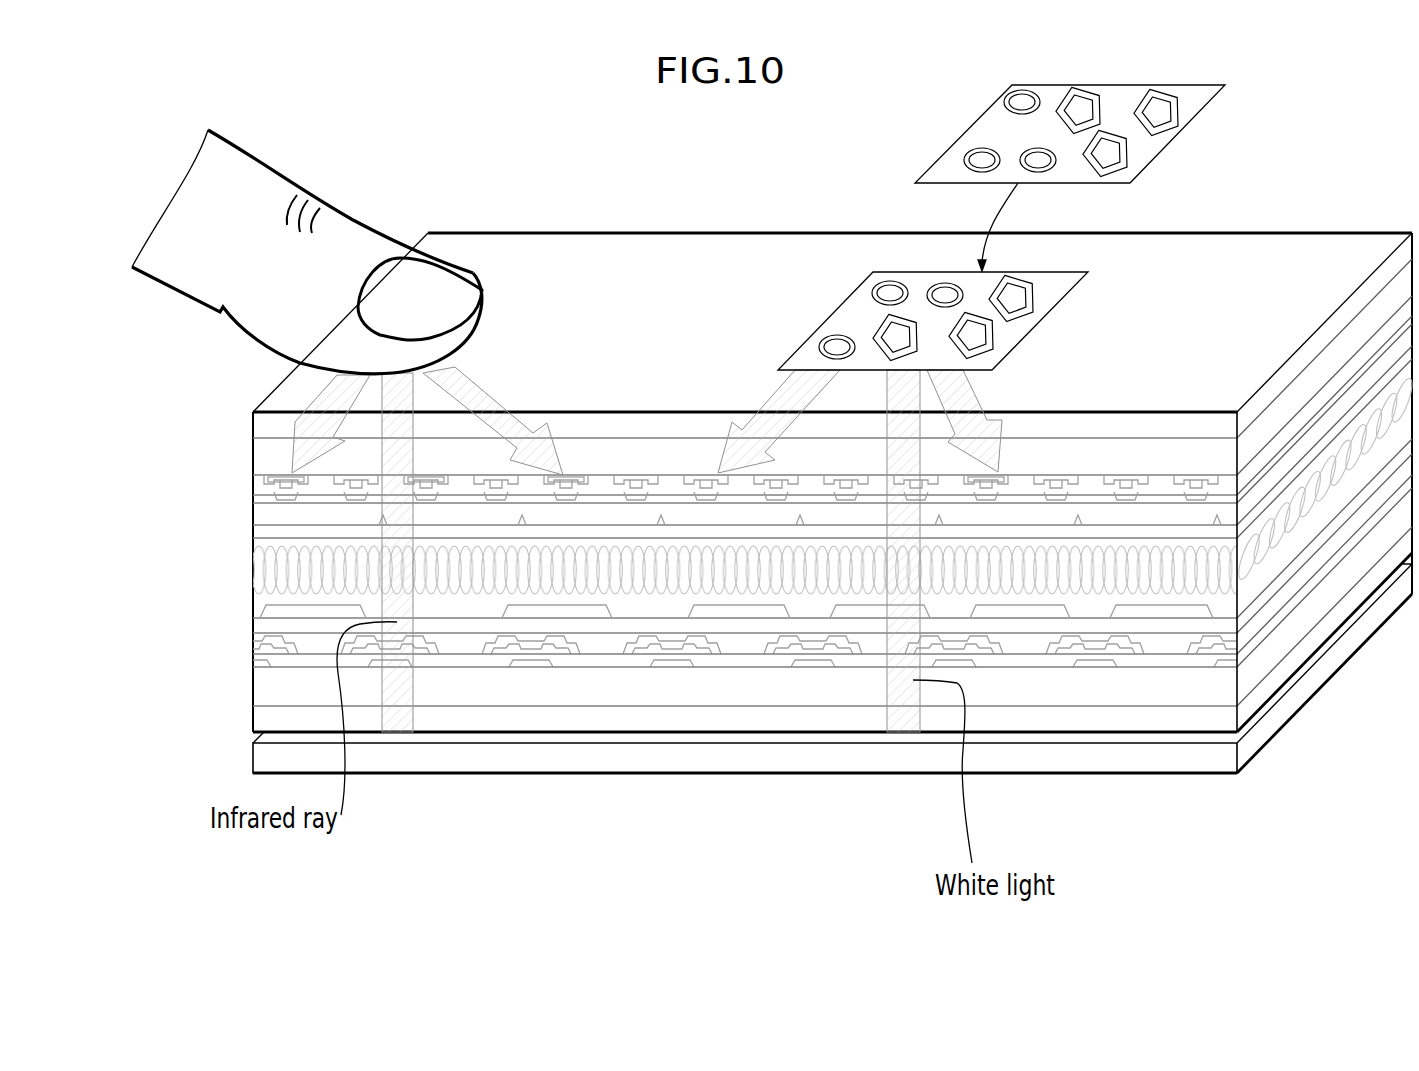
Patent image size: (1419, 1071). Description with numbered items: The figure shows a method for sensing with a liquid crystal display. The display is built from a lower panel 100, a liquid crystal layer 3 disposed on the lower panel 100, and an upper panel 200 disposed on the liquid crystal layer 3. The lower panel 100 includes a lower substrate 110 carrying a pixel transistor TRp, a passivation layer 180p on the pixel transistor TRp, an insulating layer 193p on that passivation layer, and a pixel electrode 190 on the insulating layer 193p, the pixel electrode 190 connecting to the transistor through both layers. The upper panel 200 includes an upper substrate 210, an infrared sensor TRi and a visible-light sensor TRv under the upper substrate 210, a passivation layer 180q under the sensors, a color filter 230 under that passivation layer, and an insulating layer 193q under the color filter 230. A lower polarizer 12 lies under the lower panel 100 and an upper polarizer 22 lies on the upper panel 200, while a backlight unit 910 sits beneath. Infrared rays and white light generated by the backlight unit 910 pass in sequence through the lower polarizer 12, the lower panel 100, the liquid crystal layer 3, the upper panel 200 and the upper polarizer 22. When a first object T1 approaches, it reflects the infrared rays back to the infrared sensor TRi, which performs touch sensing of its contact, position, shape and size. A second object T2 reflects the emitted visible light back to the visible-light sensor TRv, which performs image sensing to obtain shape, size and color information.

The upper polarizer 22 is at (268, 421).
The upper panel 200 is at (130, 420).
The upper substrate 210 is at (258, 458).
The passivation layer 180q is at (262, 502).
The color filter 230 is at (258, 517).
The insulating layer 193q is at (258, 534).
The liquid crystal layer 3 is at (258, 598).
The visible-light sensor TRv is at (1045, 400).
The infrared sensor TRi is at (580, 387).
The pixel transistor TRp is at (400, 658).
The lower panel 100 is at (928, 838).
The pixel electrode 190 is at (615, 608).
The insulating layer 193p is at (680, 627).
The passivation layer 180p is at (735, 650).
The lower substrate 110 is at (893, 687).
The lower polarizer 12 is at (1128, 720).
The backlight unit 910 is at (1043, 760).
The first object T1 is at (348, 228).
The second object T2 is at (1147, 145).